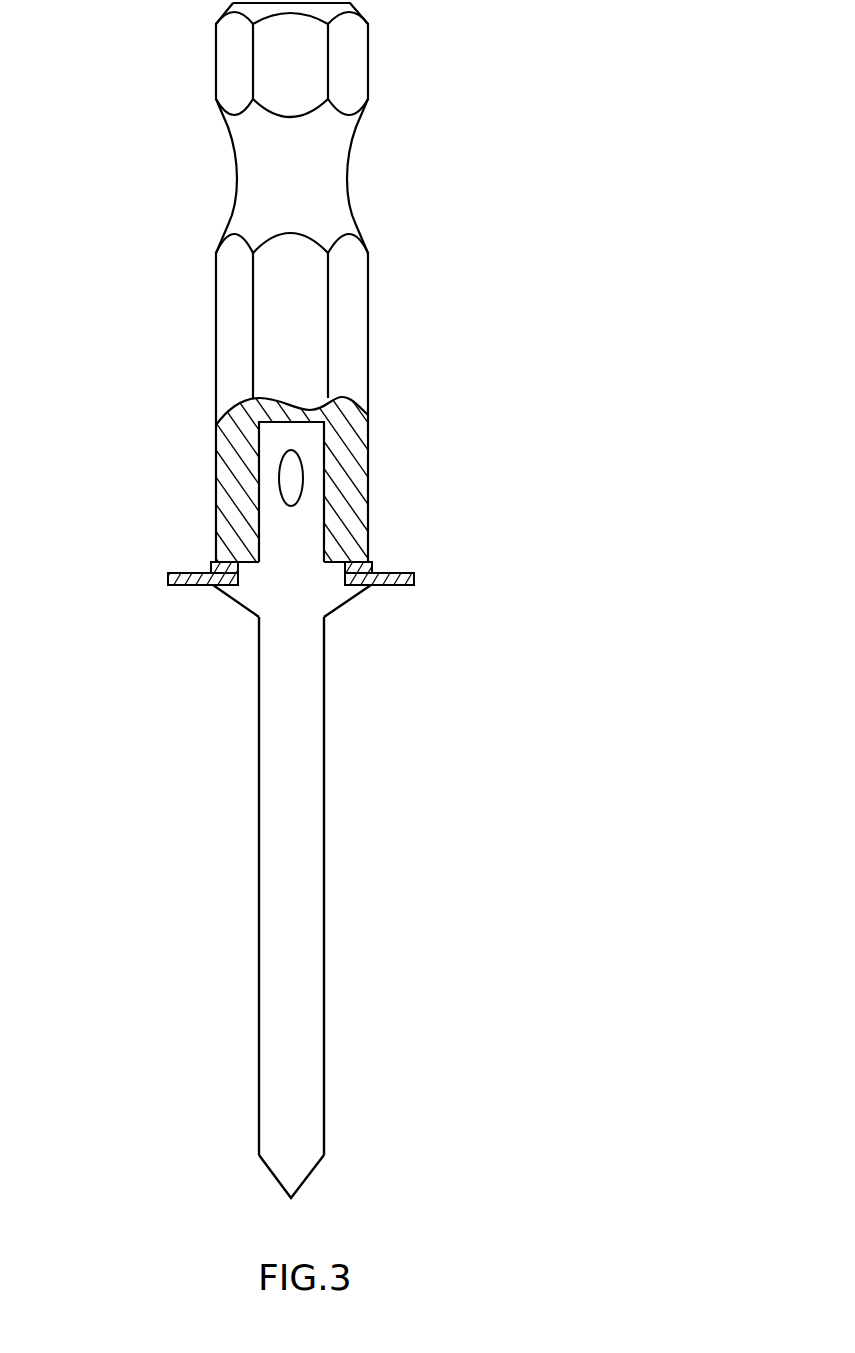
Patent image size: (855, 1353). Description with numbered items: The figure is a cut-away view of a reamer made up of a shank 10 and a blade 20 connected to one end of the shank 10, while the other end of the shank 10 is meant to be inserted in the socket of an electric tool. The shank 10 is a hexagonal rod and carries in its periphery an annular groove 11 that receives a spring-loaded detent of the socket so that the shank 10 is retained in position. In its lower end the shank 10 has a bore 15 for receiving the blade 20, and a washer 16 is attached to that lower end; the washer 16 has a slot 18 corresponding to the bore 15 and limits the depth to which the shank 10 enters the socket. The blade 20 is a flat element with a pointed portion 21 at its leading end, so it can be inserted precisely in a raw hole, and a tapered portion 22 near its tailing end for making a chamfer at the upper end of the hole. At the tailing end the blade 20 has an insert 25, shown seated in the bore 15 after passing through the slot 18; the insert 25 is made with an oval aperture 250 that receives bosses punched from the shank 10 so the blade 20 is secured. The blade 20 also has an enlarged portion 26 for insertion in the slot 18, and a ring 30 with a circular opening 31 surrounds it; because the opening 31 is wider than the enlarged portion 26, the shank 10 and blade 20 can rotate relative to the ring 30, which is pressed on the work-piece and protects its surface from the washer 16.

The shank 10 is at (366, 370).
The annular groove 11 is at (335, 308).
The bore 15 is at (265, 490).
The washer 16 is at (211, 566).
The slot 18 is at (335, 562).
The blade 20 is at (305, 987).
The pointed portion 21 is at (310, 1178).
The tapered portion 22 is at (325, 597).
The insert 25 is at (313, 477).
The aperture 250 is at (280, 463).
The enlarged portion 26 is at (344, 578).
The ring 30 is at (212, 583).
The opening 31 is at (350, 568).